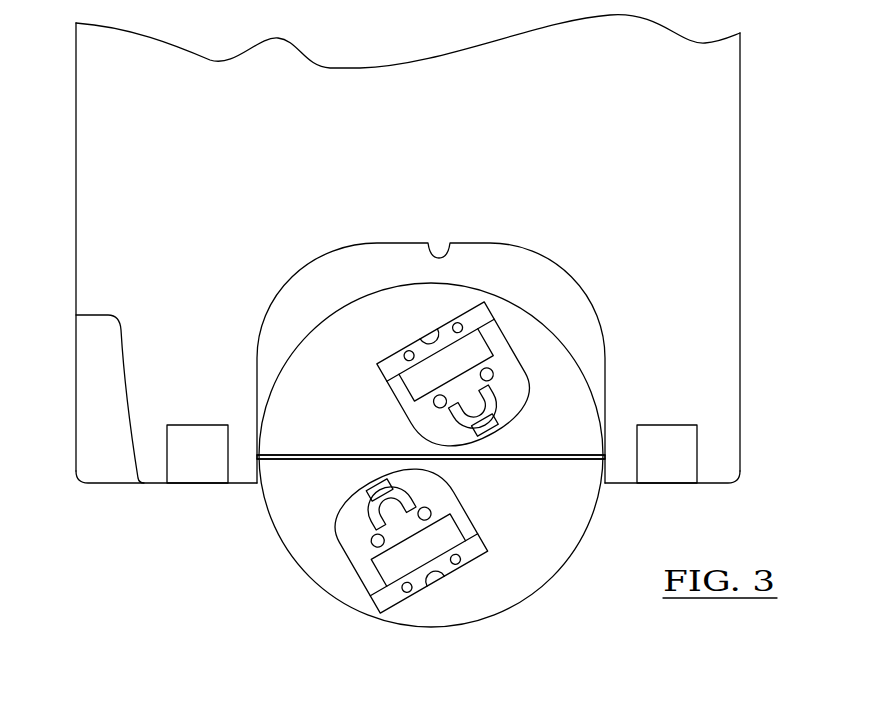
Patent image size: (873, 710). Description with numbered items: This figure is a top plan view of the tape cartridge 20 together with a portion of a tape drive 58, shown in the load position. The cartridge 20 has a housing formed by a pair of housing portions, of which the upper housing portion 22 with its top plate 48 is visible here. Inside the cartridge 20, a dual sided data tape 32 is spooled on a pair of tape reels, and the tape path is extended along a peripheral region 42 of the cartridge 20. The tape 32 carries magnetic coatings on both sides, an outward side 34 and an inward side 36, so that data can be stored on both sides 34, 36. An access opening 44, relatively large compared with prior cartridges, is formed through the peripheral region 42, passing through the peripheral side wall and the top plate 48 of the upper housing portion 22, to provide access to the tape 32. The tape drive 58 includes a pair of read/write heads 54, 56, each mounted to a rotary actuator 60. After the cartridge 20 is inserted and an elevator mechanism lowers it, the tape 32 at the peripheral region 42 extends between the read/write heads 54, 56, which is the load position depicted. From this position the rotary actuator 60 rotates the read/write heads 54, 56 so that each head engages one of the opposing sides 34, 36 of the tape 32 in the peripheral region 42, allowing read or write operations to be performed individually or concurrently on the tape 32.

The tape cartridge 20 is at (429, 294).
The upper housing portion 22 is at (96, 152).
The dual sided data tape 32 is at (410, 528).
The outward side 34 is at (445, 459).
The inward side 36 is at (302, 455).
The peripheral region 42 is at (110, 490).
The access opening 44 is at (447, 255).
The top plate 48 is at (705, 318).
The read/write head 54 is at (380, 487).
The read/write head 56 is at (487, 427).
The tape drive 58 is at (400, 493).
The rotary actuator 60 is at (384, 632).